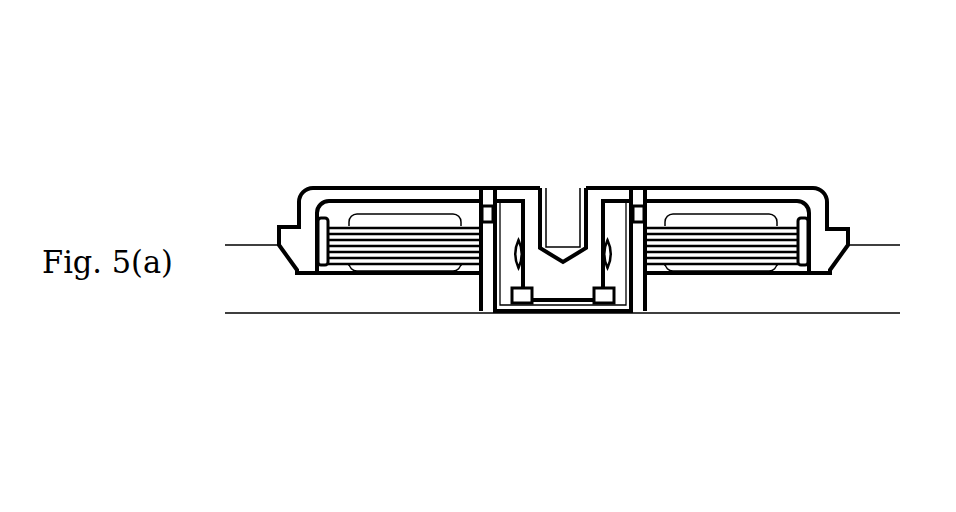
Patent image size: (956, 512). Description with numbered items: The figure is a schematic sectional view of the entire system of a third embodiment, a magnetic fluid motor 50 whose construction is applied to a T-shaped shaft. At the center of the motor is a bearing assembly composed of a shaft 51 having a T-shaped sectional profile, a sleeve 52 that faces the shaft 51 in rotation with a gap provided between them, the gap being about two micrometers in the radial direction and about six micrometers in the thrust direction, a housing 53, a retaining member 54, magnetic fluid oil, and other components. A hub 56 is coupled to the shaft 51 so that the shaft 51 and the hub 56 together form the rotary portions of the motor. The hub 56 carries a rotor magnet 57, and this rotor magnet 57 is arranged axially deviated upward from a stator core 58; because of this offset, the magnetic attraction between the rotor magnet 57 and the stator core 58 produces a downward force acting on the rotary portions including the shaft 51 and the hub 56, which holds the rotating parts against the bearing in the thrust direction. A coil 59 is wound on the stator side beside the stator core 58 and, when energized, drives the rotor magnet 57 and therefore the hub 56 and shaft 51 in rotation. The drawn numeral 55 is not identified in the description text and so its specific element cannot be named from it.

The magnetic fluid motor 50 is at (338, 148).
The shaft 51 is at (590, 193).
The sleeve 52 is at (620, 258).
The housing 53 is at (550, 315).
The retaining member 54 is at (610, 315).
The bore inner surface 55 is at (561, 198).
The hub 56 is at (680, 192).
The rotor magnet 57 is at (803, 227).
The stator core 58 is at (688, 247).
The coil 59 is at (760, 275).